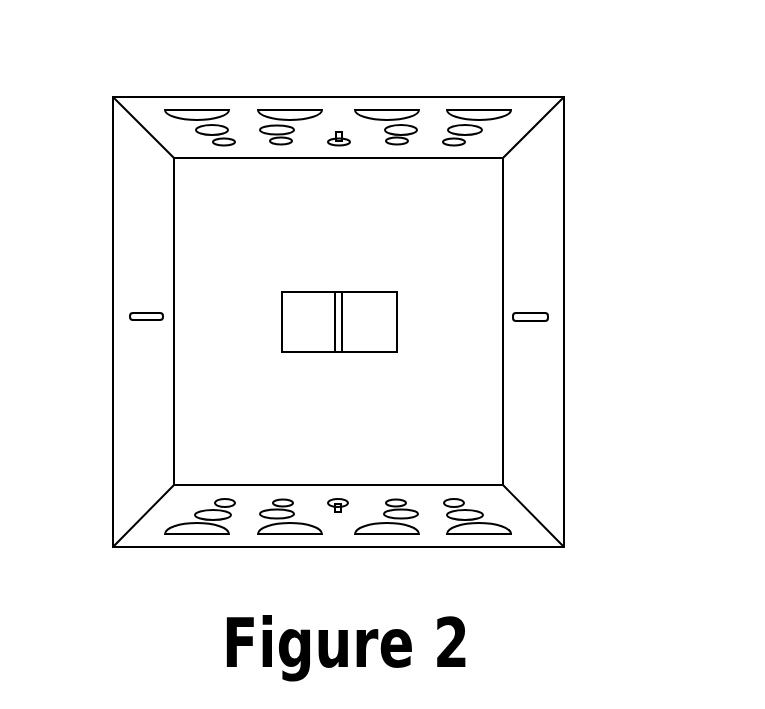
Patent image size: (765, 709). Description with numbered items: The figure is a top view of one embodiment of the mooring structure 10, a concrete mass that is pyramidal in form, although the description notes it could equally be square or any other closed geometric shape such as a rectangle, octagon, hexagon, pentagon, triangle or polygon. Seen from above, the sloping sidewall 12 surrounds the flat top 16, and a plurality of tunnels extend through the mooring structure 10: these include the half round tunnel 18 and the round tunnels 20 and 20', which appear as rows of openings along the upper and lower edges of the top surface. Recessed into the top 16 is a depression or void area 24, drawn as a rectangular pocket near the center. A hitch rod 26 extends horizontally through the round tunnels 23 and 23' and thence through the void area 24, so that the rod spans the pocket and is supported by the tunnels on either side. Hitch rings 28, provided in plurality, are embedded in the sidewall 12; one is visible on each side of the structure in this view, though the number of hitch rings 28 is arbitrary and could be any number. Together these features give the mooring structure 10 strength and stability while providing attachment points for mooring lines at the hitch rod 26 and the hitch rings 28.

The mooring structure 10 is at (91, 84).
The sidewall 12 is at (551, 158).
The top 16 is at (486, 237).
The half round tunnel 18 is at (470, 111).
The round tunnel 20 is at (219, 165).
The round tunnel 20' is at (466, 177).
The round tunnel 23 is at (351, 475).
The round tunnel 23' is at (350, 174).
The void area 24 is at (370, 345).
The hitch rod 26 is at (338, 296).
The hitch ring 28 is at (131, 314).